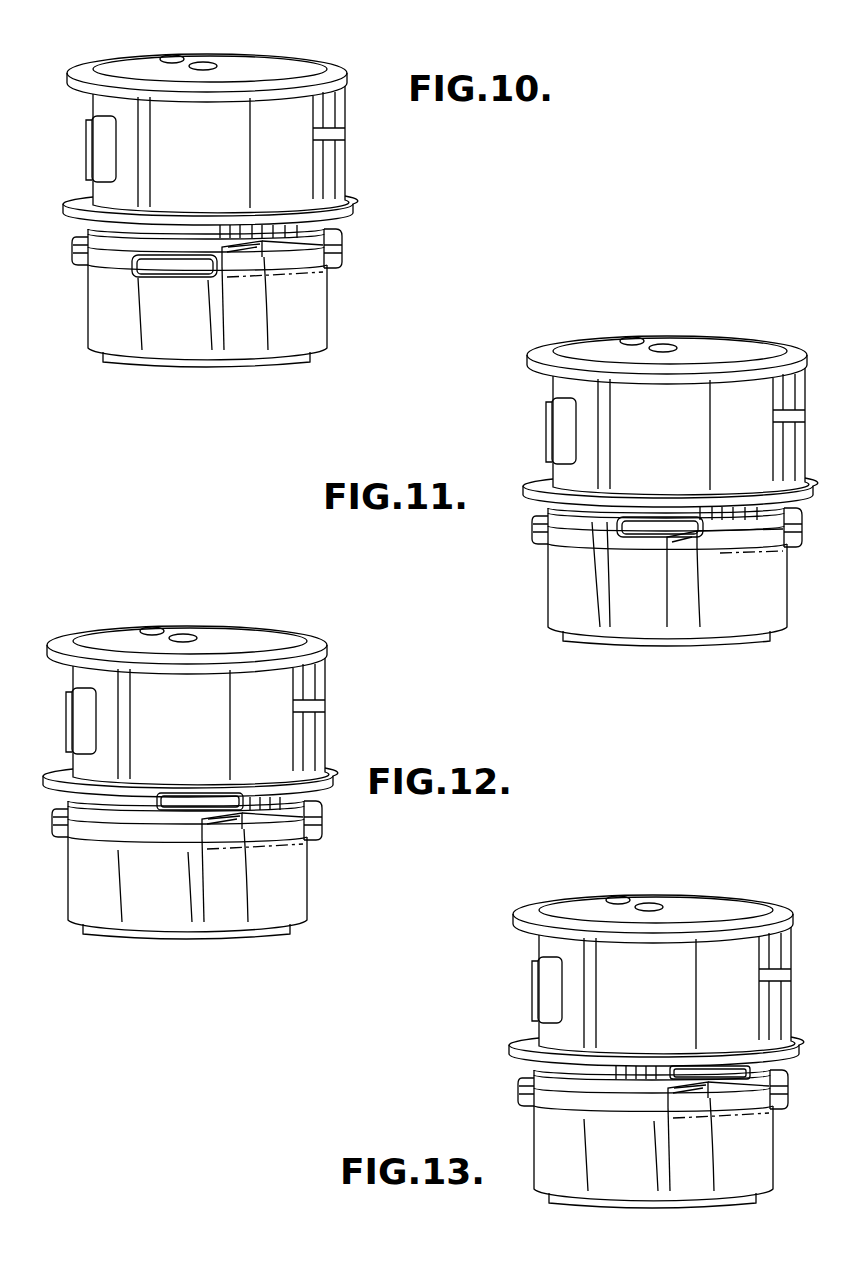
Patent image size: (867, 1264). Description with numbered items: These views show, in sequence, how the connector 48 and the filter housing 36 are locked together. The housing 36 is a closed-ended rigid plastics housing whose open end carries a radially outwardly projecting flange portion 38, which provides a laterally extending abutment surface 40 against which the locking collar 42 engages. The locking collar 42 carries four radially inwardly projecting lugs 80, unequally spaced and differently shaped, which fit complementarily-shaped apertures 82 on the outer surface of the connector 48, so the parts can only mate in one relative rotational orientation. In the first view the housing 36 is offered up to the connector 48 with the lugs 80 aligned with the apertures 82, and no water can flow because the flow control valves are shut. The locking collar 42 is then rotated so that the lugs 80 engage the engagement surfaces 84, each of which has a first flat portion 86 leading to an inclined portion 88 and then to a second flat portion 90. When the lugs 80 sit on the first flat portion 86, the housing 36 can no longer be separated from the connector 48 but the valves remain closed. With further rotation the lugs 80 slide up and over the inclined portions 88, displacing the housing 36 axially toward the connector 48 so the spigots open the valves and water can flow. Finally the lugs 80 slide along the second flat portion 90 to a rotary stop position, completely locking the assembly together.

In FIG. 10, the housing 36 is at (287, 363).
In FIG. 11, the housing 36 is at (665, 659).
In FIG. 12, the housing 36 is at (166, 949).
In FIG. 13, the housing 36 is at (628, 1218).
In FIG. 10, the flange portion 38 is at (73, 263).
In FIG. 11, the flange portion 38 is at (650, 553).
In FIG. 12, the flange portion 38 is at (171, 845).
In FIG. 13, the flange portion 38 is at (675, 1083).
In FIG. 10, the abutment surface 40 is at (83, 248).
In FIG. 11, the abutment surface 40 is at (649, 496).
In FIG. 12, the abutment surface 40 is at (180, 762).
In FIG. 13, the abutment surface 40 is at (647, 1040).
In FIG. 10, the locking collar 42 is at (299, 294).
In FIG. 11, the locking collar 42 is at (667, 580).
In FIG. 12, the locking collar 42 is at (187, 884).
In FIG. 13, the locking collar 42 is at (653, 1153).
In FIG. 10, the connector 48 is at (337, 130).
In FIG. 11, the connector 48 is at (668, 415).
In FIG. 12, the connector 48 is at (223, 705).
In FIG. 13, the connector 48 is at (662, 955).
In FIG. 10, the lugs 80 is at (172, 267).
In FIG. 11, the lugs 80 is at (657, 411).
In FIG. 12, the lugs 80 is at (165, 699).
In FIG. 13, the lugs 80 is at (692, 968).
In FIG. 10, the apertures 82 is at (185, 250).
In FIG. 11, the apertures 82 is at (682, 597).
In FIG. 12, the apertures 82 is at (265, 803).
In FIG. 13, the apertures 82 is at (621, 1155).
In FIG. 10, the engagement surfaces 84 is at (280, 242).
In FIG. 11, the engagement surfaces 84 is at (682, 544).
In FIG. 12, the engagement surfaces 84 is at (222, 825).
In FIG. 13, the engagement surfaces 84 is at (688, 1094).
In FIG. 10, the first flat portion 86 is at (237, 257).
In FIG. 11, the first flat portion 86 is at (688, 614).
In FIG. 12, the first flat portion 86 is at (173, 898).
In FIG. 13, the first flat portion 86 is at (665, 1169).
In FIG. 10, the inclined portion 88 is at (242, 253).
In FIG. 11, the inclined portion 88 is at (732, 610).
In FIG. 12, the inclined portion 88 is at (239, 897).
In FIG. 13, the inclined portion 88 is at (729, 1168).
In FIG. 10, the second flat portion 90 is at (290, 243).
In FIG. 11, the second flat portion 90 is at (757, 607).
In FIG. 12, the second flat portion 90 is at (290, 856).
In FIG. 13, the second flat portion 90 is at (763, 1137).